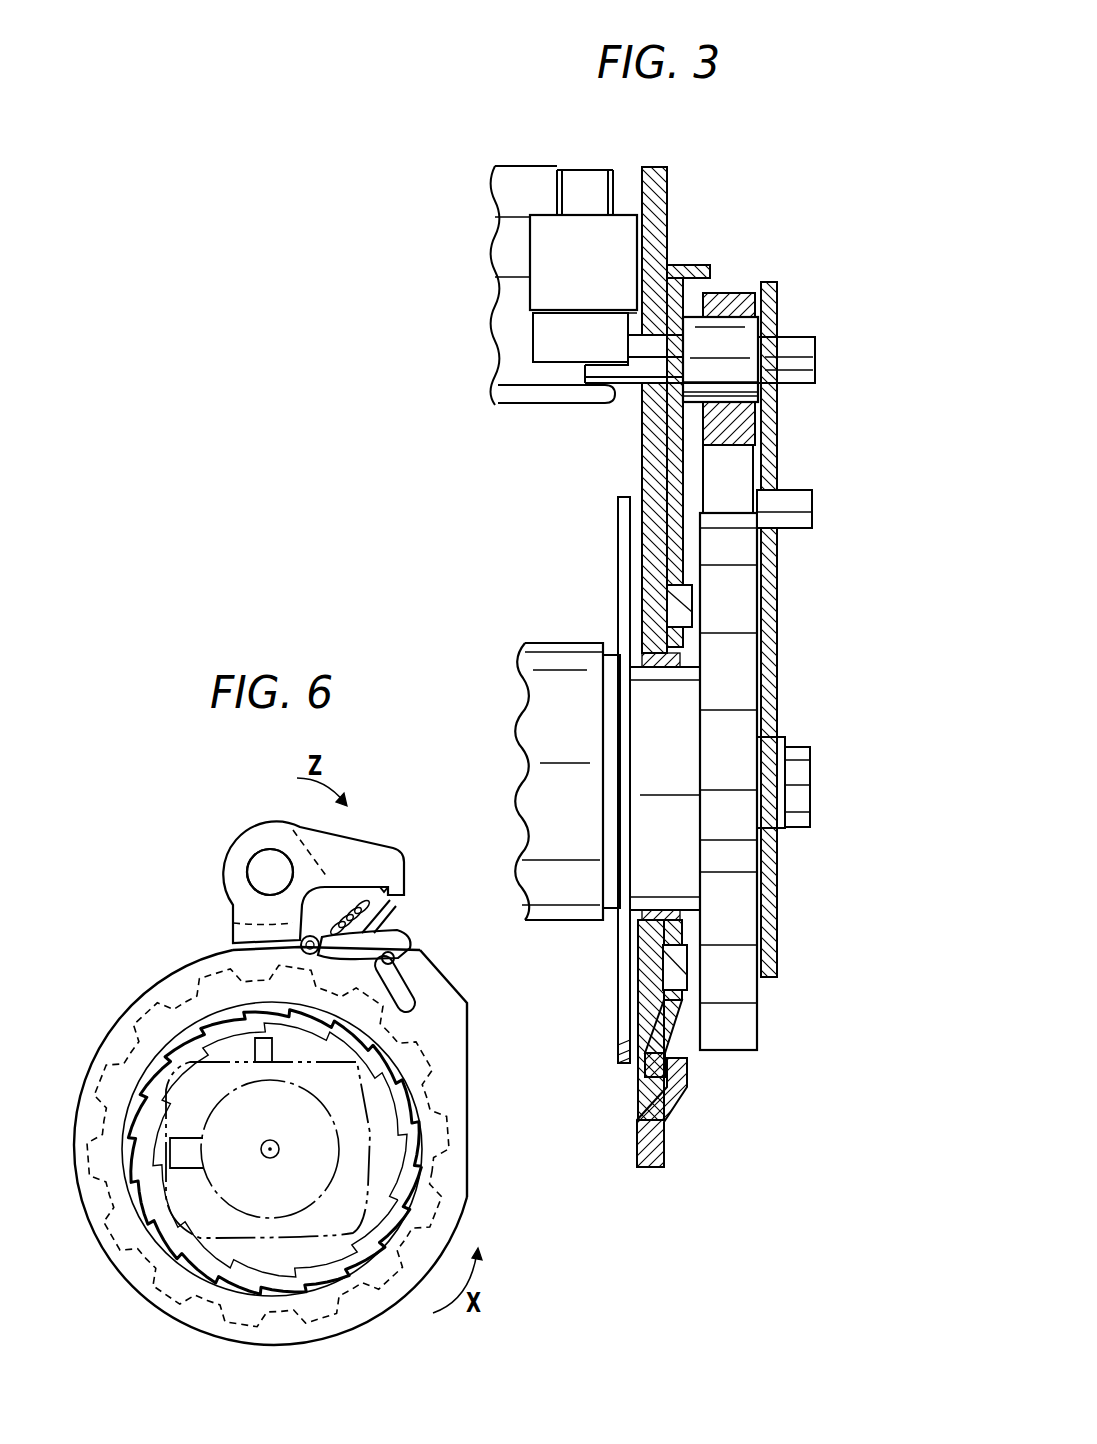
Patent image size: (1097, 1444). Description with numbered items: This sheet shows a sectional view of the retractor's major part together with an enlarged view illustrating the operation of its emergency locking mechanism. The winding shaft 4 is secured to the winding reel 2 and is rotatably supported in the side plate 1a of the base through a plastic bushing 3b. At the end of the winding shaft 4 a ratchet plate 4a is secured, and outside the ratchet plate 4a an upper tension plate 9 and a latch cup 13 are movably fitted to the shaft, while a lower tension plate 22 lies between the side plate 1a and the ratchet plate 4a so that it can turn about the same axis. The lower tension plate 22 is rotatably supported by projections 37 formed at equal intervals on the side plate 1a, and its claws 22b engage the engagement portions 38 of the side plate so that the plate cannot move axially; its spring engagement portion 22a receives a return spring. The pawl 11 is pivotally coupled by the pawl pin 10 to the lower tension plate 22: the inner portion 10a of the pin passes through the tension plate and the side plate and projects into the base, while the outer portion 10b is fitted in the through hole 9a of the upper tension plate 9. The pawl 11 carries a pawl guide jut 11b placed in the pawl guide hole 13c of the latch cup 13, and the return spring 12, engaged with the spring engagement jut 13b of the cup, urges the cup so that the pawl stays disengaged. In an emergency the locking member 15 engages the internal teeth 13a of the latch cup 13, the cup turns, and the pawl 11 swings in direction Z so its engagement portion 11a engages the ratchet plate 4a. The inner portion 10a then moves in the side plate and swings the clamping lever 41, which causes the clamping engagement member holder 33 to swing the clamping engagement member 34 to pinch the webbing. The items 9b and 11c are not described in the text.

In FIG. 3, the side plate 1a is at (663, 207).
In FIG. 3, the winding reel 2 is at (556, 660).
In FIG. 3, the plastic bushing 3b is at (665, 670).
In FIG. 3, the winding shaft 4 is at (762, 1026).
In FIG. 3, the ratchet plate 4a is at (730, 785).
In FIG. 6, the ratchet plate 4a is at (432, 1100).
In FIG. 3, the upper tension plate 9 is at (777, 668).
In FIG. 6, the upper tension plate 9 is at (245, 925).
In FIG. 6, the through hole 9a is at (404, 898).
In FIG. 6, the lever hole 9b is at (255, 875).
In FIG. 3, the pawl pin 10 is at (818, 362).
In FIG. 6, the pawl pin 10 is at (262, 868).
In FIG. 3, the inner portion 10a is at (640, 350).
In FIG. 3, the outer portion 10b is at (800, 385).
In FIG. 3, the pawl 11 is at (733, 296).
In FIG. 6, the pawl 11 is at (368, 933).
In FIG. 6, the engagement portion 11a is at (430, 985).
In FIG. 3, the pawl guide jut 11b is at (800, 510).
In FIG. 6, the pawl guide jut 11b is at (396, 958).
In FIG. 3, the nut face 11c is at (770, 380).
In FIG. 6, the return spring 12 is at (341, 895).
In FIG. 6, the latch cup 13 is at (110, 1213).
In FIG. 6, the internal teeth 13a is at (408, 1150).
In FIG. 6, the spring engagement jut 13b is at (290, 945).
In FIG. 6, the pawl guide hole 13c is at (412, 1010).
In FIG. 6, the locking member 15 is at (183, 1118).
In FIG. 3, the lower tension plate 22 is at (668, 430).
In FIG. 3, the spring engagement portion 22a is at (702, 266).
In FIG. 3, the claw 22b is at (645, 1062).
In FIG. 3, the clamping engagement member holder 33 is at (510, 190).
In FIG. 3, the clamping engagement member 34 is at (530, 392).
In FIG. 3, the projection 37 is at (692, 612).
In FIG. 3, the engagement portion 38 is at (690, 1098).
In FIG. 3, the clamping lever 41 is at (548, 245).